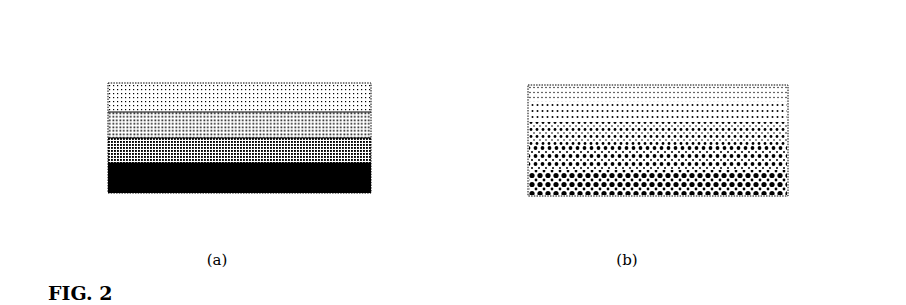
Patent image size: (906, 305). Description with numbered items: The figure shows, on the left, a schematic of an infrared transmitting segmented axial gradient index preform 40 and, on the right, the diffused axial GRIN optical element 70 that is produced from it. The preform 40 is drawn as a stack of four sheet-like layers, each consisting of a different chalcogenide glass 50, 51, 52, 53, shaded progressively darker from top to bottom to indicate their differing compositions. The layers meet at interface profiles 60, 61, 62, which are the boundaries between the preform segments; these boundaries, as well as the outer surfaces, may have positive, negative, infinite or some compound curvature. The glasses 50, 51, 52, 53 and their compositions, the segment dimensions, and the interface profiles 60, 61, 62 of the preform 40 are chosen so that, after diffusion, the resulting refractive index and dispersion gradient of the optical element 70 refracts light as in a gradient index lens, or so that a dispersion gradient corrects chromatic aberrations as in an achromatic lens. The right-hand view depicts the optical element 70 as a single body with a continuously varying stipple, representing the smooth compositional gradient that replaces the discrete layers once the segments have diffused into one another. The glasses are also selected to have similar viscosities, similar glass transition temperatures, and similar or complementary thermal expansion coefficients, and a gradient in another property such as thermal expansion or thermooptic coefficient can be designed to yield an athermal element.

The preform 40 is at (205, 81).
The glass 50 is at (128, 102).
The glass 51 is at (108, 133).
The glass 52 is at (110, 158).
The glass 53 is at (108, 185).
The interface profile 60 is at (371, 112).
The interface profile 61 is at (371, 138).
The interface profile 62 is at (371, 163).
The diffused GRIN optical element 70 is at (607, 80).